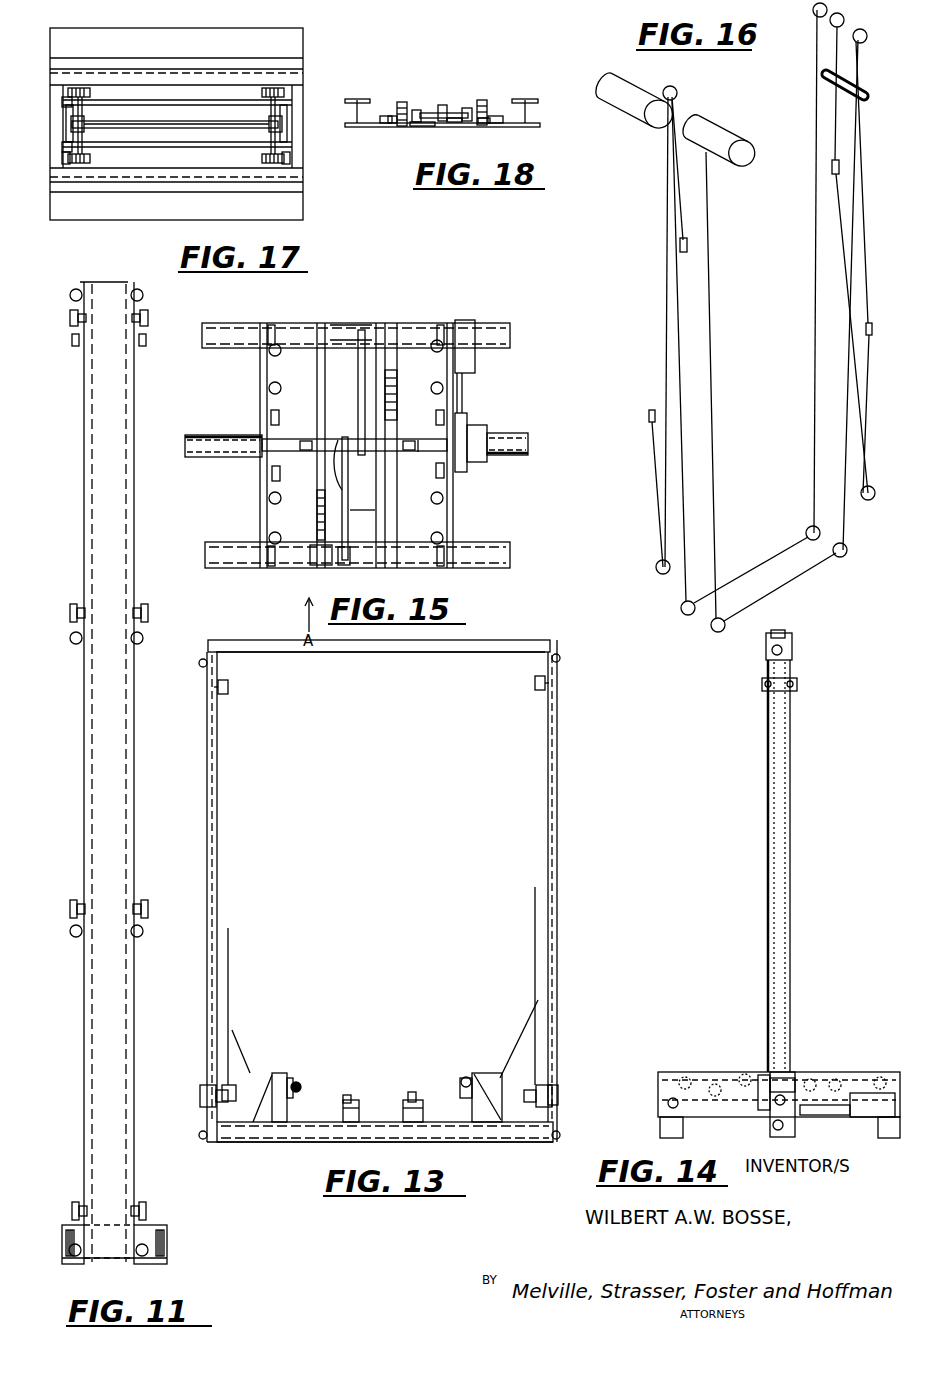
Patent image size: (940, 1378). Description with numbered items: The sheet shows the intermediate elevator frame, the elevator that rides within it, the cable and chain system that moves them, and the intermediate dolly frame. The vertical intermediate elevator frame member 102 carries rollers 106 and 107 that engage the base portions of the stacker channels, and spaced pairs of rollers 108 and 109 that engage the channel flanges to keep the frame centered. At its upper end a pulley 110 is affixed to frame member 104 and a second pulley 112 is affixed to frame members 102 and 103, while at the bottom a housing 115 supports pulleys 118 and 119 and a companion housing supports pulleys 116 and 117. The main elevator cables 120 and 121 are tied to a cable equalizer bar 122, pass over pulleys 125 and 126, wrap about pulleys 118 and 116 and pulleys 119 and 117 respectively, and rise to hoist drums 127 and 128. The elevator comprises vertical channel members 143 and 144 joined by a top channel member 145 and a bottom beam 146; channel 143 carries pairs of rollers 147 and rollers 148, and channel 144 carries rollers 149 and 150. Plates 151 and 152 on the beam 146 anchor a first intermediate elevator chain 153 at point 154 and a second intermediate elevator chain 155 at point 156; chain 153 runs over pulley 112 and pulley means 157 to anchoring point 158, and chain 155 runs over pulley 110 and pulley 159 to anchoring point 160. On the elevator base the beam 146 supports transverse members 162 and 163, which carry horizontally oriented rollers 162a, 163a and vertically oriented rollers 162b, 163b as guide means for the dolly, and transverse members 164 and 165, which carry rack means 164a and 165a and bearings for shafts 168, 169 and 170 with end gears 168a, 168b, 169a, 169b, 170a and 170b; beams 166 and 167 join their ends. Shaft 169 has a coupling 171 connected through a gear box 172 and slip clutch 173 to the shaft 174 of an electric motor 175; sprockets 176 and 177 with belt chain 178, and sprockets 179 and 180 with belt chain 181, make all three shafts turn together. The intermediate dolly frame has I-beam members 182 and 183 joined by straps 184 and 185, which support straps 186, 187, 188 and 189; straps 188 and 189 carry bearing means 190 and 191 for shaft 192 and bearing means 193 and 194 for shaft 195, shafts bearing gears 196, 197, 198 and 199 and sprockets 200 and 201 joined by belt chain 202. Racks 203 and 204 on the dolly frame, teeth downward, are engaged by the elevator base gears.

In FIG. 11, the vertical intermediate elevator frame member 102 is at (105, 778).
In FIG. 11, the frame member 103 is at (90, 284).
In FIG. 11, the frame member 104 is at (126, 284).
In FIG. 11, the roller 106 is at (70, 295).
In FIG. 11, the roller 107 is at (144, 296).
In FIG. 11, the pair of rollers 108 is at (72, 338).
In FIG. 11, the pair of rollers 109 is at (146, 338).
In FIG. 16, the pulley 110 is at (677, 92).
In FIG. 11, the pulley 110 is at (148, 316).
In FIG. 16, the second pulley 112 is at (845, 22).
In FIG. 11, the second pulley 112 is at (70, 312).
In FIG. 11, the housing 115 is at (150, 1228).
In FIG. 16, the pulley 116 is at (683, 614).
In FIG. 16, the pulley 117 is at (718, 632).
In FIG. 16, the pulley 118 is at (806, 532).
In FIG. 11, the pulley 118 is at (160, 1244).
In FIG. 16, the pulley 119 is at (847, 552).
In FIG. 11, the pulley 119 is at (66, 1242).
In FIG. 16, the main elevator cable 120 is at (812, 283).
In FIG. 16, the main elevator cable 121 is at (850, 435).
In FIG. 16, the cable equalizer bar 122 is at (860, 106).
In FIG. 16, the pulley 125 is at (813, 14).
In FIG. 16, the pulley 126 is at (866, 40).
In FIG. 16, the hoist drum 127 is at (640, 105).
In FIG. 16, the hoist drum 128 is at (724, 128).
In FIG. 15, the vertical channel member 143 is at (183, 448).
In FIG. 13, the vertical channel member 143 is at (218, 812).
In FIG. 15, the vertical channel member 144 is at (524, 440).
In FIG. 13, the vertical channel member 144 is at (548, 808).
In FIG. 14, the vertical channel member 144 is at (786, 818).
In FIG. 13, the channel member 145 is at (392, 644).
In FIG. 14, the channel member 145 is at (788, 634).
In FIG. 13, the beam 146 is at (218, 1144).
In FIG. 13, the pair of rollers 147 is at (230, 688).
In FIG. 13, the roller 148 is at (200, 666).
In FIG. 13, the pair of rollers 149 is at (534, 684).
In FIG. 14, the pair of rollers 149 is at (762, 686).
In FIG. 13, the roller 150 is at (560, 660).
In FIG. 14, the roller 150 is at (784, 656).
In FIG. 15, the vertically oriented plate 151 is at (518, 456).
In FIG. 13, the vertically oriented plate 151 is at (498, 1076).
In FIG. 15, the vertically oriented plate 152 is at (230, 436).
In FIG. 13, the vertically oriented plate 152 is at (290, 1070).
In FIG. 16, the first intermediate elevator chain 153 is at (834, 144).
In FIG. 13, the first intermediate elevator chain 153 is at (534, 934).
In FIG. 16, the anchoring point 154 is at (836, 176).
In FIG. 13, the anchoring point 154 is at (556, 1082).
In FIG. 16, the second intermediate elevator chain 155 is at (683, 218).
In FIG. 13, the second intermediate elevator chain 155 is at (232, 944).
In FIG. 16, the anchoring point 156 is at (688, 246).
In FIG. 13, the anchoring point 156 is at (232, 1084).
In FIG. 16, the pulley means 157 is at (873, 500).
In FIG. 16, the second anchoring point 158 is at (878, 328).
In FIG. 16, the pulley 159 is at (660, 573).
In FIG. 16, the second anchoring point 160 is at (649, 414).
In FIG. 15, the transverse member 162 is at (260, 370).
In FIG. 13, the transverse member 162 is at (287, 1100).
In FIG. 15, the horizontally oriented rollers 162a is at (282, 388).
In FIG. 13, the horizontally oriented rollers 162a is at (302, 1086).
In FIG. 15, the vertically oriented rollers 162b is at (280, 415).
In FIG. 13, the vertically oriented rollers 162b is at (294, 1082).
In FIG. 15, the transverse member 163 is at (453, 520).
In FIG. 13, the transverse member 163 is at (488, 1126).
In FIG. 14, the transverse member 163 is at (856, 1072).
In FIG. 15, the horizontally oriented rollers 163a is at (440, 384).
In FIG. 13, the horizontally oriented rollers 163a is at (462, 1082).
In FIG. 14, the horizontally oriented rollers 163a is at (690, 1078).
In FIG. 15, the vertically oriented rollers 163b is at (458, 412).
In FIG. 13, the vertically oriented rollers 163b is at (466, 1078).
In FIG. 14, the vertically oriented rollers 163b is at (672, 1078).
In FIG. 15, the transverse member 164 is at (322, 323).
In FIG. 13, the transverse member 164 is at (350, 1124).
In FIG. 15, the rack means 164a is at (316, 526).
In FIG. 13, the rack means 164a is at (351, 1100).
In FIG. 15, the transverse member 165 is at (392, 323).
In FIG. 13, the transverse member 165 is at (420, 1122).
In FIG. 15, the rack means 165a is at (384, 396).
In FIG. 13, the rack means 165a is at (410, 1092).
In FIG. 14, the rack means 165a is at (716, 1084).
In FIG. 15, the beam 166 is at (220, 323).
In FIG. 14, the beam 166 is at (886, 1140).
In FIG. 15, the beam 167 is at (218, 542).
In FIG. 13, the beam 167 is at (296, 1132).
In FIG. 14, the beam 167 is at (662, 1130).
In FIG. 15, the shaft 168 is at (350, 560).
In FIG. 15, the gear 168a is at (278, 566).
In FIG. 15, the gear 168b is at (440, 566).
In FIG. 15, the shaft 169 is at (336, 439).
In FIG. 15, the gear 169a is at (305, 451).
In FIG. 15, the gear 169b is at (408, 441).
In FIG. 15, the shaft 170 is at (338, 325).
In FIG. 15, the gear 170a is at (290, 316).
In FIG. 15, the gear 170b is at (442, 326).
In FIG. 15, the coupling 171 is at (424, 456).
In FIG. 15, the gear box 172 is at (470, 420).
In FIG. 14, the gear box 172 is at (756, 1104).
In FIG. 15, the slip clutch 173 is at (480, 462).
In FIG. 15, the shaft 174 is at (464, 390).
In FIG. 14, the shaft 174 is at (834, 1116).
In FIG. 15, the electric motor 175 is at (474, 322).
In FIG. 14, the electric motor 175 is at (868, 1106).
In FIG. 15, the sprocket 176 is at (322, 565).
In FIG. 15, the sprocket 177 is at (348, 490).
In FIG. 15, the belt chain 178 is at (350, 512).
In FIG. 15, the second sprocket 179 is at (350, 466).
In FIG. 15, the sprocket 180 is at (376, 323).
In FIG. 15, the belt chain 181 is at (361, 380).
In FIG. 17, the structural member 182 is at (95, 210).
In FIG. 18, the structural member 182 is at (358, 100).
In FIG. 17, the structural member 183 is at (296, 38).
In FIG. 18, the structural member 183 is at (528, 98).
In FIG. 17, the straplike structural member 184 is at (50, 168).
In FIG. 17, the straplike structural member 185 is at (300, 177).
In FIG. 18, the straplike structural member 185 is at (452, 124).
In FIG. 17, the straplike structural member 186 is at (160, 80).
In FIG. 17, the straplike structural member 187 is at (218, 175).
In FIG. 18, the straplike structural member 187 is at (392, 110).
In FIG. 17, the straplike structural member 188 is at (222, 115).
In FIG. 18, the straplike structural member 188 is at (482, 125).
In FIG. 17, the straplike structural member 189 is at (175, 138).
In FIG. 18, the straplike structural member 189 is at (418, 127).
In FIG. 17, the bearing means 190 is at (292, 82).
In FIG. 18, the bearing means 190 is at (483, 100).
In FIG. 17, the bearing means 191 is at (287, 147).
In FIG. 18, the bearing means 191 is at (417, 110).
In FIG. 17, the shaft 192 is at (292, 106).
In FIG. 18, the shaft 192 is at (443, 105).
In FIG. 17, the bearing means 193 is at (62, 101).
In FIG. 17, the bearing means 194 is at (62, 150).
In FIG. 17, the shaft 195 is at (72, 118).
In FIG. 17, the gear 196 is at (288, 66).
In FIG. 18, the gear 196 is at (472, 110).
In FIG. 17, the gear 197 is at (290, 157).
In FIG. 18, the gear 197 is at (402, 102).
In FIG. 17, the gear 198 is at (92, 92).
In FIG. 17, the gear 199 is at (92, 160).
In FIG. 17, the sprocket 200 is at (269, 129).
In FIG. 17, the sprocket 201 is at (71, 126).
In FIG. 17, the belt chain 202 is at (132, 121).
In FIG. 18, the belt chain 202 is at (450, 113).
In FIG. 18, the rack 203 is at (385, 124).
In FIG. 18, the rack 204 is at (505, 128).